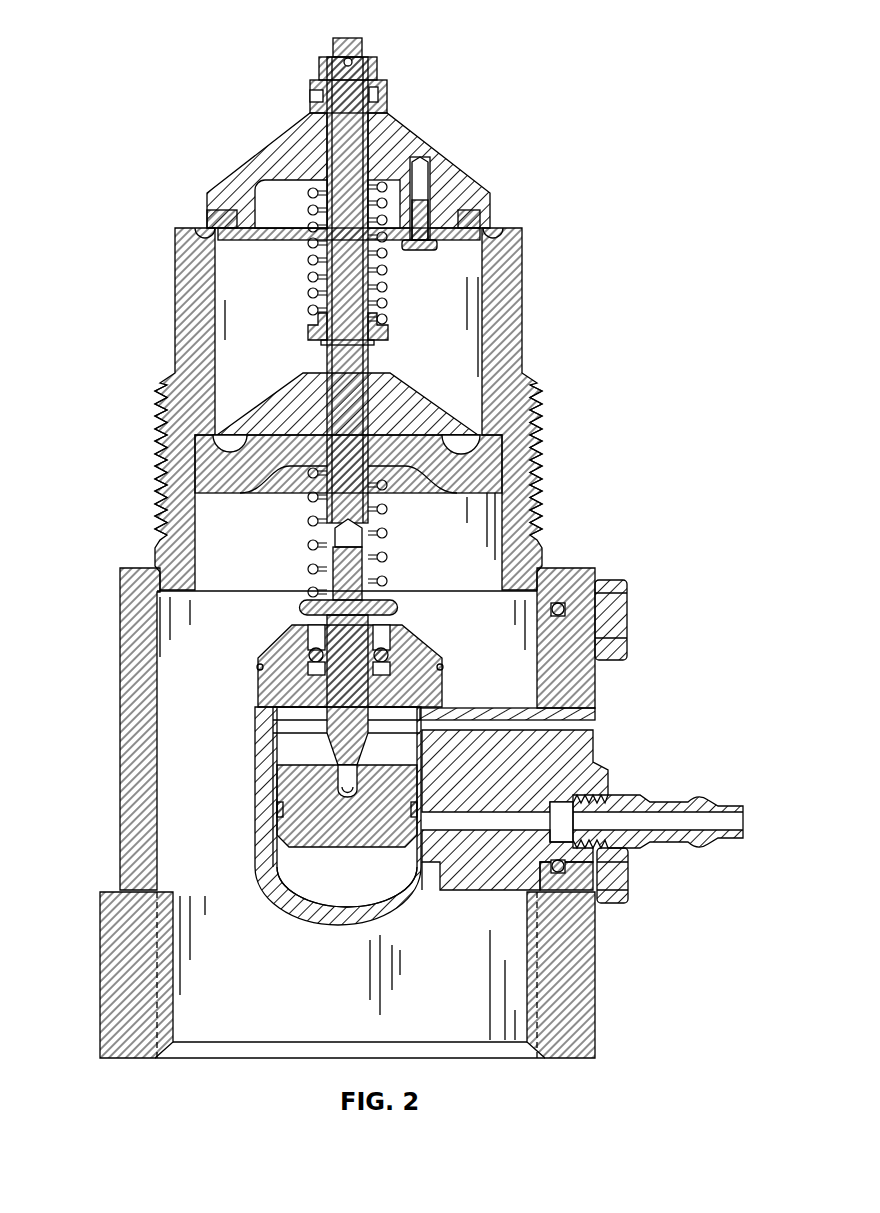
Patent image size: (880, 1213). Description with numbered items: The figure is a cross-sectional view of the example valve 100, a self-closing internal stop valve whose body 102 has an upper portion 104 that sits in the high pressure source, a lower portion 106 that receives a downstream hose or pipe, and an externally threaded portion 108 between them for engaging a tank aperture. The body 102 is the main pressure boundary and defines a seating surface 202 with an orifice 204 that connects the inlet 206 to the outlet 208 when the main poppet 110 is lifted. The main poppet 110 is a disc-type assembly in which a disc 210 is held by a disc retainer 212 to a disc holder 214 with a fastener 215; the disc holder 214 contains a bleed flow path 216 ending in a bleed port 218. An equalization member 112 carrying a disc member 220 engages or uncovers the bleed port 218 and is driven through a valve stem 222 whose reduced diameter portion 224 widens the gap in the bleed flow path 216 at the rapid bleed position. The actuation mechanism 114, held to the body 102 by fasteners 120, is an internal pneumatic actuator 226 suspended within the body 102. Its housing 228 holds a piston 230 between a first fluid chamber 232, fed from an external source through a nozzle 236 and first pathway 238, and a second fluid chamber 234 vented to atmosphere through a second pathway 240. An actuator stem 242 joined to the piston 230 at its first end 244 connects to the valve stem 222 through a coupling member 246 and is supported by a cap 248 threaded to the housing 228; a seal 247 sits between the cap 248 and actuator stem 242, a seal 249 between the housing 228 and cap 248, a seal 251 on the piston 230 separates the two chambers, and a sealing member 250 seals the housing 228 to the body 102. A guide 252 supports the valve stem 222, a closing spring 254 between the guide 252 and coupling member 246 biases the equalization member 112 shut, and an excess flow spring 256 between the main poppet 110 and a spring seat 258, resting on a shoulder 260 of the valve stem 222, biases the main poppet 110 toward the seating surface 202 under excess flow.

The valve 100 is at (148, 40).
The body 102 is at (120, 690).
The first or upper portion 104 is at (175, 310).
The second or lower portion 106 is at (100, 975).
The externally threaded portion 108 is at (160, 455).
The main poppet 110 is at (402, 122).
The equalization member 112 is at (388, 90).
The actuation mechanism 114 is at (724, 748).
The fasteners 120 is at (630, 616).
The seating surface 202 is at (497, 232).
The orifice 204 is at (220, 243).
The inlet 206 is at (516, 188).
The outlet 208 is at (273, 1048).
The disc 210 is at (212, 228).
The disc retainer 212 is at (480, 233).
The disc holder 214 is at (262, 168).
The fastener 215 is at (415, 250).
The bleed flow path 216 is at (372, 160).
The bleed port 218 is at (317, 120).
The disc member 220 is at (322, 93).
The valve stem 222 is at (358, 402).
The reduced diameter portion 224 is at (309, 205).
The internal pneumatic actuator 226 is at (612, 770).
The housing 228 is at (305, 915).
The piston 230 is at (300, 825).
The first fluid chamber 232 is at (353, 892).
The second fluid chamber 234 is at (290, 745).
The nozzle 236 is at (722, 810).
The first pathway 238 is at (507, 838).
The second pathway 240 is at (592, 714).
The actuator stem 242 is at (365, 700).
The first end 244 is at (277, 808).
The coupling member 246 is at (303, 606).
The seal 247 is at (309, 655).
The cap 248 is at (405, 652).
The seal 249 is at (258, 667).
The sealing member 250 is at (562, 606).
The seal 251 is at (343, 785).
The guide 252 is at (490, 450).
The closing spring 254 is at (310, 522).
The excess flow spring 256 is at (388, 283).
The spring seat 258 is at (312, 325).
The shoulder 260 is at (370, 345).